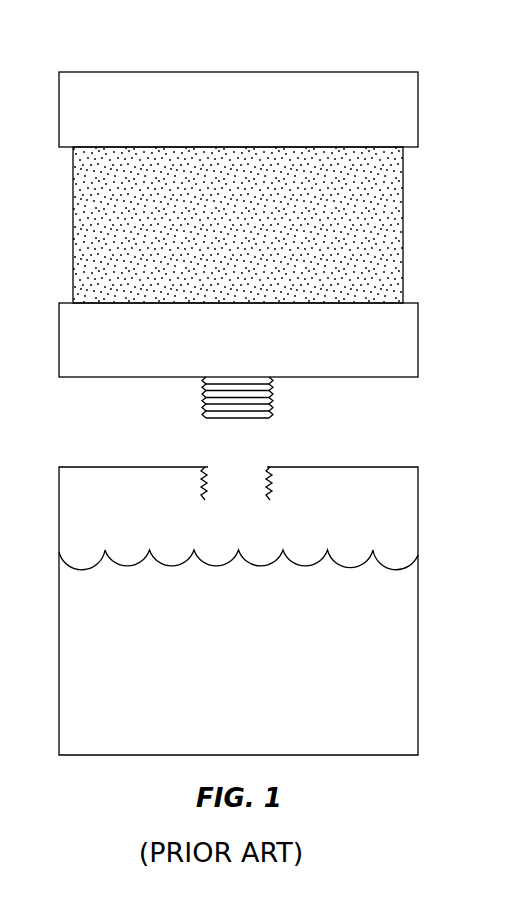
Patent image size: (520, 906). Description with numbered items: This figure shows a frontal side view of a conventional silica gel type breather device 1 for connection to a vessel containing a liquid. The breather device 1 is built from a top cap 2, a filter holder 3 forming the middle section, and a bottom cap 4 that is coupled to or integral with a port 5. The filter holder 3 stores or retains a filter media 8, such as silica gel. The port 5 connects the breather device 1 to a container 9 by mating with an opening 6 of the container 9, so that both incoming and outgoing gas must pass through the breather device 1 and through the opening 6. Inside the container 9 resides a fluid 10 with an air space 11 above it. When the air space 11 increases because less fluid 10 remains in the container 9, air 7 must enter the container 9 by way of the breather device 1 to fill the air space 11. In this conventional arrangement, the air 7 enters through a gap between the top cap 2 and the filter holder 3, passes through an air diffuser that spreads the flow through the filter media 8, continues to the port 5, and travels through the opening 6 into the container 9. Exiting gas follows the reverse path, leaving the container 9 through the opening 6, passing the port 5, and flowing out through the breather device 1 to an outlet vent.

The breather device 1 is at (427, 58).
The top cap 2 is at (419, 110).
The filter holder 3 is at (237, 225).
The bottom cap 4 is at (419, 340).
The port 5 is at (273, 400).
The opening 6 is at (238, 433).
The air 7 is at (63, 155).
The filter media 8 is at (103, 243).
The container 9 is at (269, 611).
The fluid 10 is at (390, 592).
The air space 11 is at (127, 467).